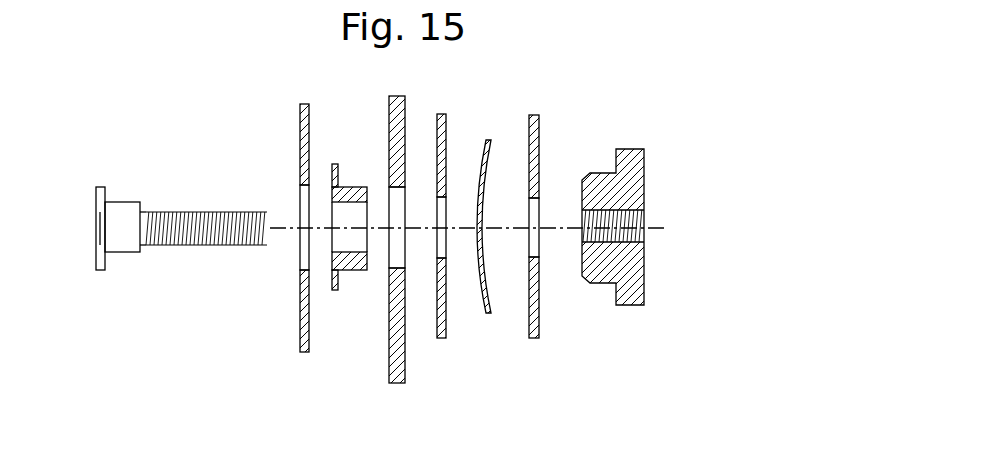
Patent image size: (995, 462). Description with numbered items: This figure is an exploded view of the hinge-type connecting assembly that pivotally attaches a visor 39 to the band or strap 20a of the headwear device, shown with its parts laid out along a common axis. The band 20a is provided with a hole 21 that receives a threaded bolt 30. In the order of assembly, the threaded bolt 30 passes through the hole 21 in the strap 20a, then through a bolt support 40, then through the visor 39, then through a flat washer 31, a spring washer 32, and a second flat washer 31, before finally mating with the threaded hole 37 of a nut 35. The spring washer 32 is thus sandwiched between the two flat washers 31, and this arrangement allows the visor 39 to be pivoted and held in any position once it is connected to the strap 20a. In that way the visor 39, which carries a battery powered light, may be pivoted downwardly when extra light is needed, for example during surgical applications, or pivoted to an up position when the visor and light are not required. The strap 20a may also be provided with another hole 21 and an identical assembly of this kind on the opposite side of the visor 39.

The threaded bolt 30 is at (197, 245).
The band 20a is at (304, 352).
The hole 21 is at (300, 251).
The bolt support 40 is at (335, 290).
The visor 39 is at (397, 383).
The washer 31 is at (441, 338).
The spring washer 32 is at (488, 313).
The nut 35 is at (632, 305).
The threaded hole 37 is at (640, 233).